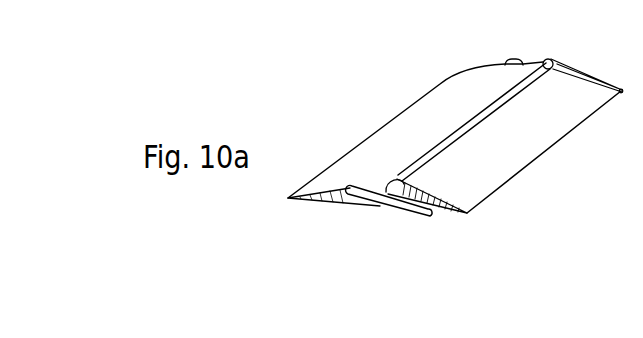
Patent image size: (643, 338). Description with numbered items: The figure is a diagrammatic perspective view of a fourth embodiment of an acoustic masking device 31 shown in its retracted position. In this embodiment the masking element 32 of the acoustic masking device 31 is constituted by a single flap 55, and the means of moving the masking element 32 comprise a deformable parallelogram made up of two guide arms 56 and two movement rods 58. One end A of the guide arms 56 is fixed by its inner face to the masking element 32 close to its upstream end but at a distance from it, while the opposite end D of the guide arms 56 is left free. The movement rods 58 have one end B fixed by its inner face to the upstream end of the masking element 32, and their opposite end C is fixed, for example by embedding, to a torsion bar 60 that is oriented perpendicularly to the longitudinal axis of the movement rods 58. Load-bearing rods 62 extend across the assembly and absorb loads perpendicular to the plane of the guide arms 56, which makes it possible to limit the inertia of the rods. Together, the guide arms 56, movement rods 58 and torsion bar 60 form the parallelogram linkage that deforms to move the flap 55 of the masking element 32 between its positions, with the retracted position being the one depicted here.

The flap 55 is at (400, 113).
The torsion bar 60 is at (478, 119).
The load-bearing rods 62 is at (513, 158).
The movement rods 58 is at (437, 218).
The guide arms 56 is at (373, 199).
The masking element 32 is at (338, 213).
The acoustic masking device 31 is at (408, 221).
The end of the guide arms A is at (425, 227).
The end of the movement rods B is at (478, 218).
The end of the movement rods C is at (387, 167).
The end of the guide arms D is at (347, 169).